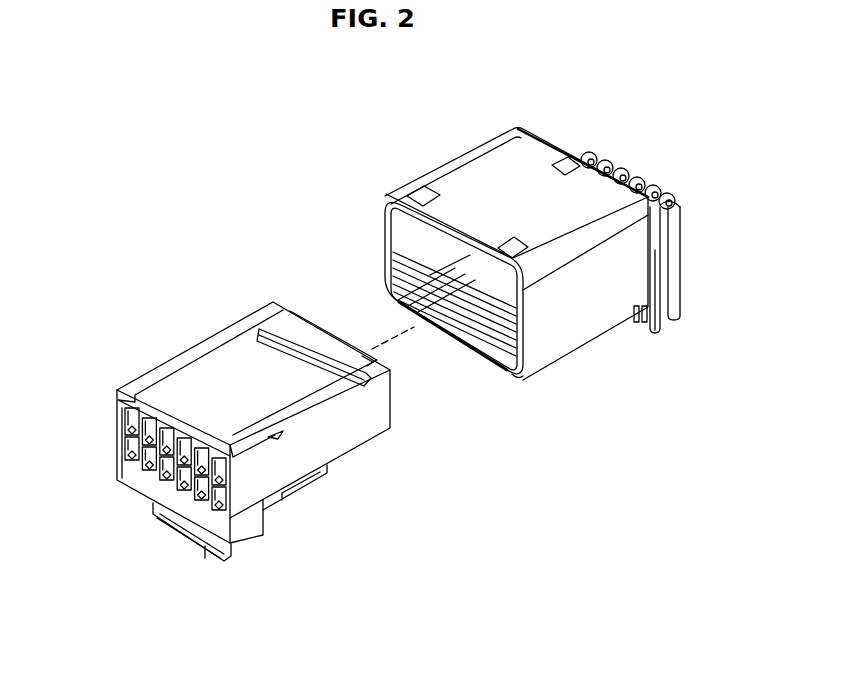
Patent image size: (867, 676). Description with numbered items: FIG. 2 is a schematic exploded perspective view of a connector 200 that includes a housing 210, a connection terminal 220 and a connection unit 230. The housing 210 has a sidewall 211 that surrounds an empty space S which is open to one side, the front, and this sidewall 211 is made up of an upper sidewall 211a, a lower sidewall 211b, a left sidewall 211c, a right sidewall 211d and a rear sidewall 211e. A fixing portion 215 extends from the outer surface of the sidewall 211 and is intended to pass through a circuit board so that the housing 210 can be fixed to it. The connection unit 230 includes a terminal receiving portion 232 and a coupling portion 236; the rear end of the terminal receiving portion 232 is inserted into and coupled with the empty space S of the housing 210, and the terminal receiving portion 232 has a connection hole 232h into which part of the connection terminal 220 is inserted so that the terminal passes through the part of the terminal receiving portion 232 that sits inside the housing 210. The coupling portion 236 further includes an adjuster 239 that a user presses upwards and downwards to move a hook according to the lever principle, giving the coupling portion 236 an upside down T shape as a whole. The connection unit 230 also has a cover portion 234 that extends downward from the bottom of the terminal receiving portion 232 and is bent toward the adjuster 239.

The connector 200 is at (202, 110).
The housing 210 is at (489, 127).
The sidewall 211 is at (647, 548).
The upper sidewall 211a is at (478, 192).
The lower sidewall 211b is at (563, 362).
The left sidewall 211c is at (411, 185).
The right sidewall 211d is at (587, 303).
The rear sidewall 211e is at (557, 148).
The empty space S is at (458, 287).
The fixing portion 215 is at (522, 391).
The connection terminal 220 is at (645, 182).
The connection unit 230 is at (194, 339).
The terminal receiving portion 232 is at (124, 420).
The connection hole 232h is at (128, 447).
The cover portion 234 is at (163, 508).
The coupling portion 236 is at (278, 503).
The adjuster 239 is at (190, 532).